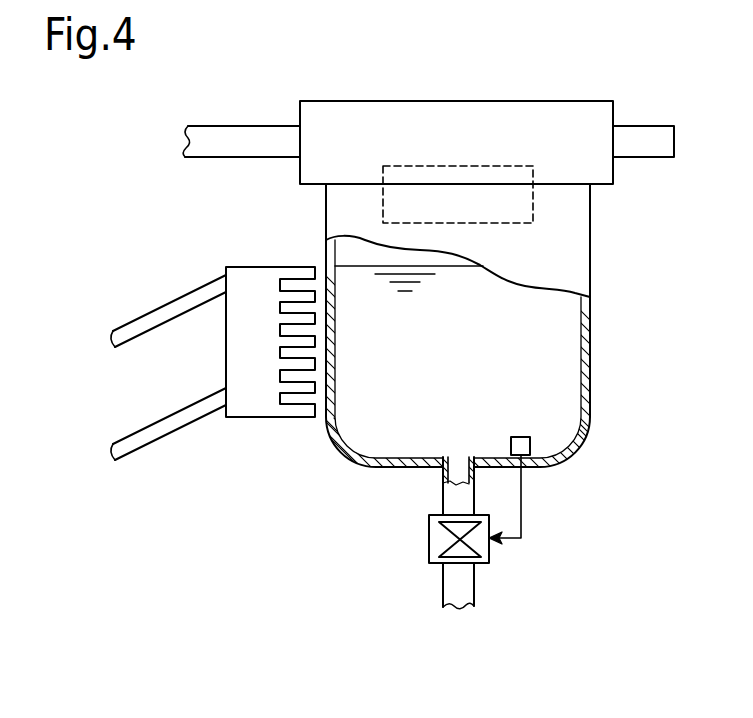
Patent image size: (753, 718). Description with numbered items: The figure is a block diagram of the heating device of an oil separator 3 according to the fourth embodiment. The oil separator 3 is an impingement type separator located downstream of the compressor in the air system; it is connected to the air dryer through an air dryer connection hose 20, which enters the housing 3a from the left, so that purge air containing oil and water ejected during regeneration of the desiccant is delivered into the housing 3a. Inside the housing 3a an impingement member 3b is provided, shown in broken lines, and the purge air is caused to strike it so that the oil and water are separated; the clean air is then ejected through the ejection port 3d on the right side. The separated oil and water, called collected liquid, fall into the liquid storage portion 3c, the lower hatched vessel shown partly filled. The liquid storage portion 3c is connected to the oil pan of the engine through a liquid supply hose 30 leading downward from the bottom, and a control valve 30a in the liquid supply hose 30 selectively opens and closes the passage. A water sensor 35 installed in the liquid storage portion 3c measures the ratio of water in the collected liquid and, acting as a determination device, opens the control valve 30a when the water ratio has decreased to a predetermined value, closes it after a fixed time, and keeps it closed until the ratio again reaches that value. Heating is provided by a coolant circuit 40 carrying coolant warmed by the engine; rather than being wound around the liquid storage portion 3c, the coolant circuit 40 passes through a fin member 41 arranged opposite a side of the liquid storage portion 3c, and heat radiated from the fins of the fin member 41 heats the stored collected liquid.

The oil separator 3 is at (483, 101).
The housing 3a is at (326, 203).
The impingement member 3b is at (452, 166).
The liquid storage portion 3c is at (590, 399).
The ejection port 3d is at (647, 126).
The air dryer connection hose 20 is at (232, 126).
The liquid supply hose 30 is at (443, 495).
The control valve 30a is at (429, 538).
The water sensor 35 is at (520, 437).
The coolant circuit 40 is at (158, 308).
The fin member 41 is at (248, 267).